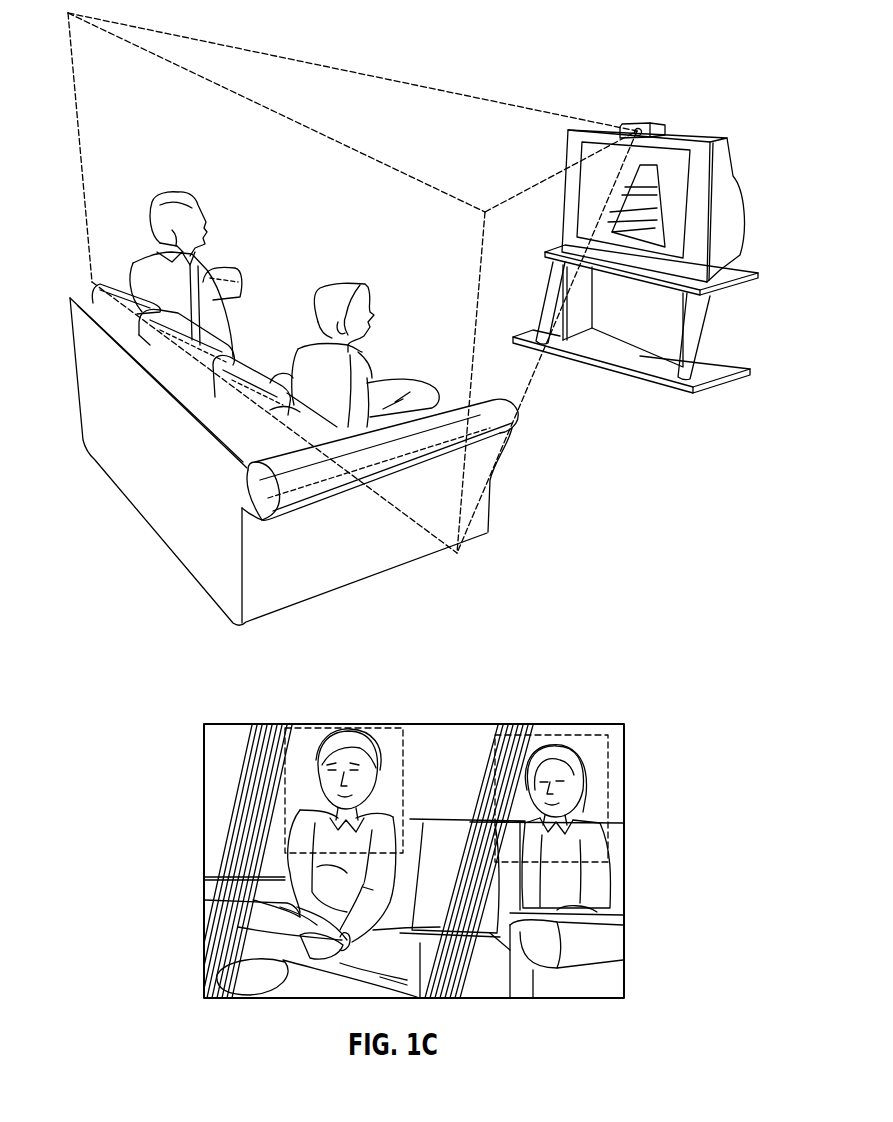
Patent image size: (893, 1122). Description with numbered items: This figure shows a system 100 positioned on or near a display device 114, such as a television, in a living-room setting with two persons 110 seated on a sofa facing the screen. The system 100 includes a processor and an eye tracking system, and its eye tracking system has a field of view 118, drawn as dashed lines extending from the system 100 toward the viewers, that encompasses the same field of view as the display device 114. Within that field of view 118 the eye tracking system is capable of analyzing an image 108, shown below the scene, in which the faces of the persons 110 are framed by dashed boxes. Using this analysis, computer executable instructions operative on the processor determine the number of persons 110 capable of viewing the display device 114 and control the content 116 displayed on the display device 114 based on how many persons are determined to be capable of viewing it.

The system 100 is at (659, 123).
The image 108 is at (645, 805).
The persons 110 is at (162, 197).
The display device 114 is at (736, 190).
The content 116 is at (690, 232).
The field of view 118 is at (474, 93).